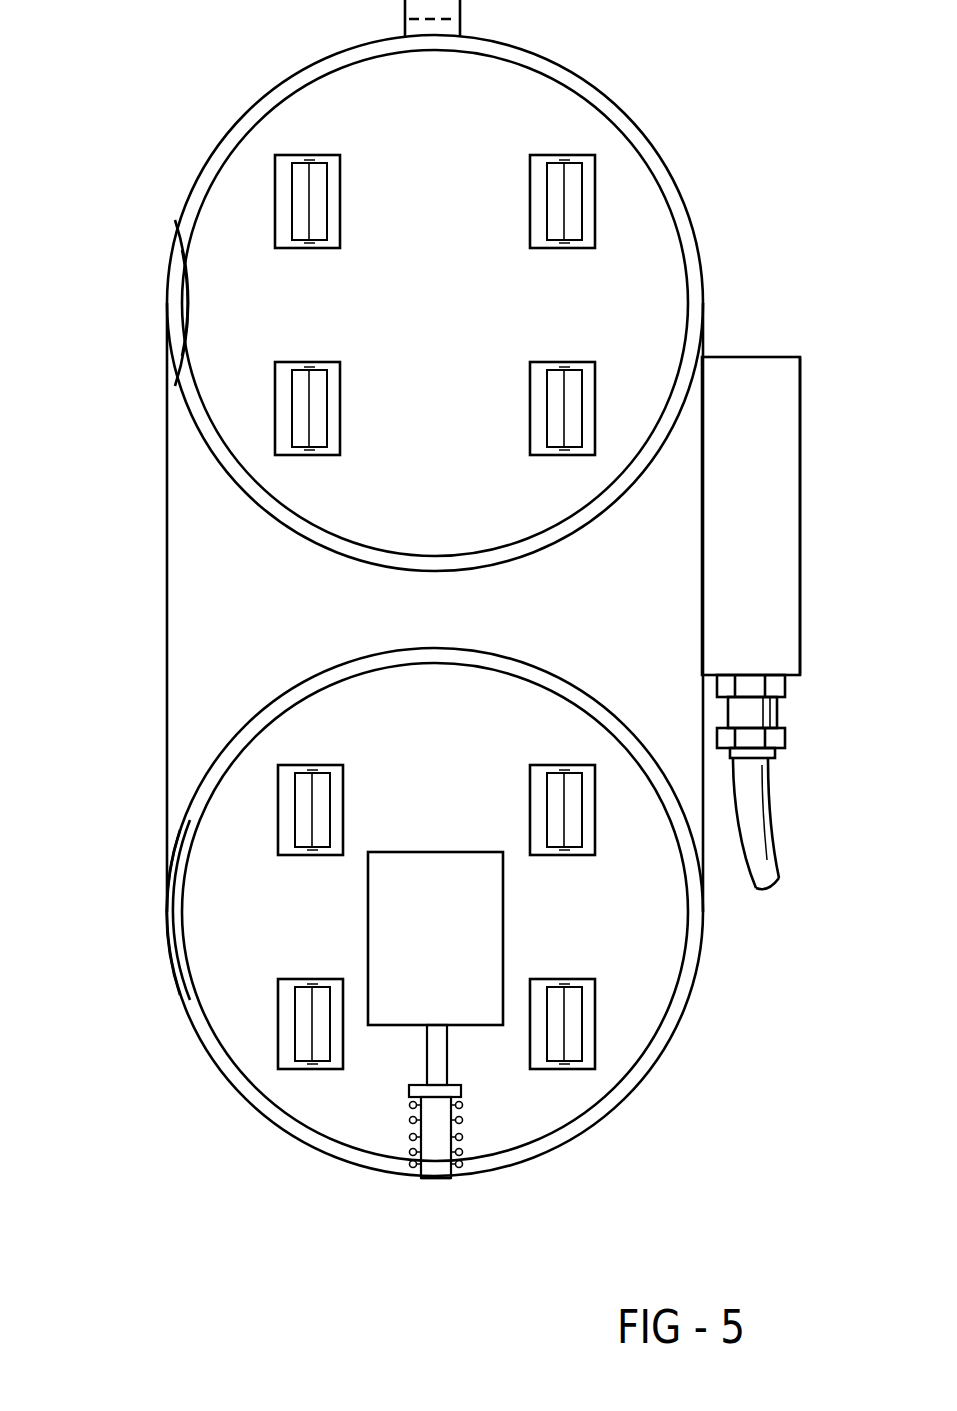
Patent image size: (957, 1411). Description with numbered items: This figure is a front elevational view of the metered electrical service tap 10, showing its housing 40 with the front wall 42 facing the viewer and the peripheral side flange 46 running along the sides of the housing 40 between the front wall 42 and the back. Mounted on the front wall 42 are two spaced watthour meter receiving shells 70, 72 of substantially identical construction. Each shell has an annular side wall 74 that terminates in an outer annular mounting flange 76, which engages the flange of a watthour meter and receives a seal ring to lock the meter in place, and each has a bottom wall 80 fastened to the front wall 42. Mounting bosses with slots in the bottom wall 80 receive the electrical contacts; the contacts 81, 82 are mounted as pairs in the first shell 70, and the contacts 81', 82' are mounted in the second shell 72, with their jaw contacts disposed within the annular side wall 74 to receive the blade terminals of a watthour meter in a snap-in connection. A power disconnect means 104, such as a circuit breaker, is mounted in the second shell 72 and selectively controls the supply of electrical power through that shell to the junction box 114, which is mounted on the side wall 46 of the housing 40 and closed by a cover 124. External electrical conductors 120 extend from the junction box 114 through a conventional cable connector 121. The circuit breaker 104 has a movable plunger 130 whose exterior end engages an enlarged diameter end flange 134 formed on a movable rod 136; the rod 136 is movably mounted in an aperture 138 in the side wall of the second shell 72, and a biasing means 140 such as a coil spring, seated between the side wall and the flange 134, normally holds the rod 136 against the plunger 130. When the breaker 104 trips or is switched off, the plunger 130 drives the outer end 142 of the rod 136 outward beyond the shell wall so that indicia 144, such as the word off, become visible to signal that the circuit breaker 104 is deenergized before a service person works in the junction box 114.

The metered electrical service tap 10 is at (112, 537).
The housing 40 is at (157, 635).
The front wall 42 is at (175, 477).
The peripheral side flange 46 is at (167, 591).
The watthour meter receiving shell 70 is at (258, 100).
The watthour meter receiving shell 72 is at (170, 979).
The annular side wall 74 is at (188, 298).
The outer annular mounting flange 76 is at (202, 174).
The bottom wall 80 is at (200, 243).
The electrical contact 81 is at (435, 172).
The electrical contact 82 is at (435, 376).
The electrical contact 81' is at (362, 755).
The electrical contact 82' is at (443, 1035).
The power disconnect means 104 is at (493, 950).
The junction box 114 is at (737, 350).
The external electrical conductors 120 is at (768, 822).
The cable connector 121 is at (777, 712).
The cover 124 is at (780, 408).
The movable plunger 130 is at (447, 1067).
The enlarged diameter end flange 134 is at (410, 1090).
The movable rod 136 is at (420, 1185).
The aperture 138 is at (447, 1178).
The biasing means 140 is at (465, 1125).
The outer end of rod 142 is at (439, 1183).
The indicia 144 is at (417, 1143).